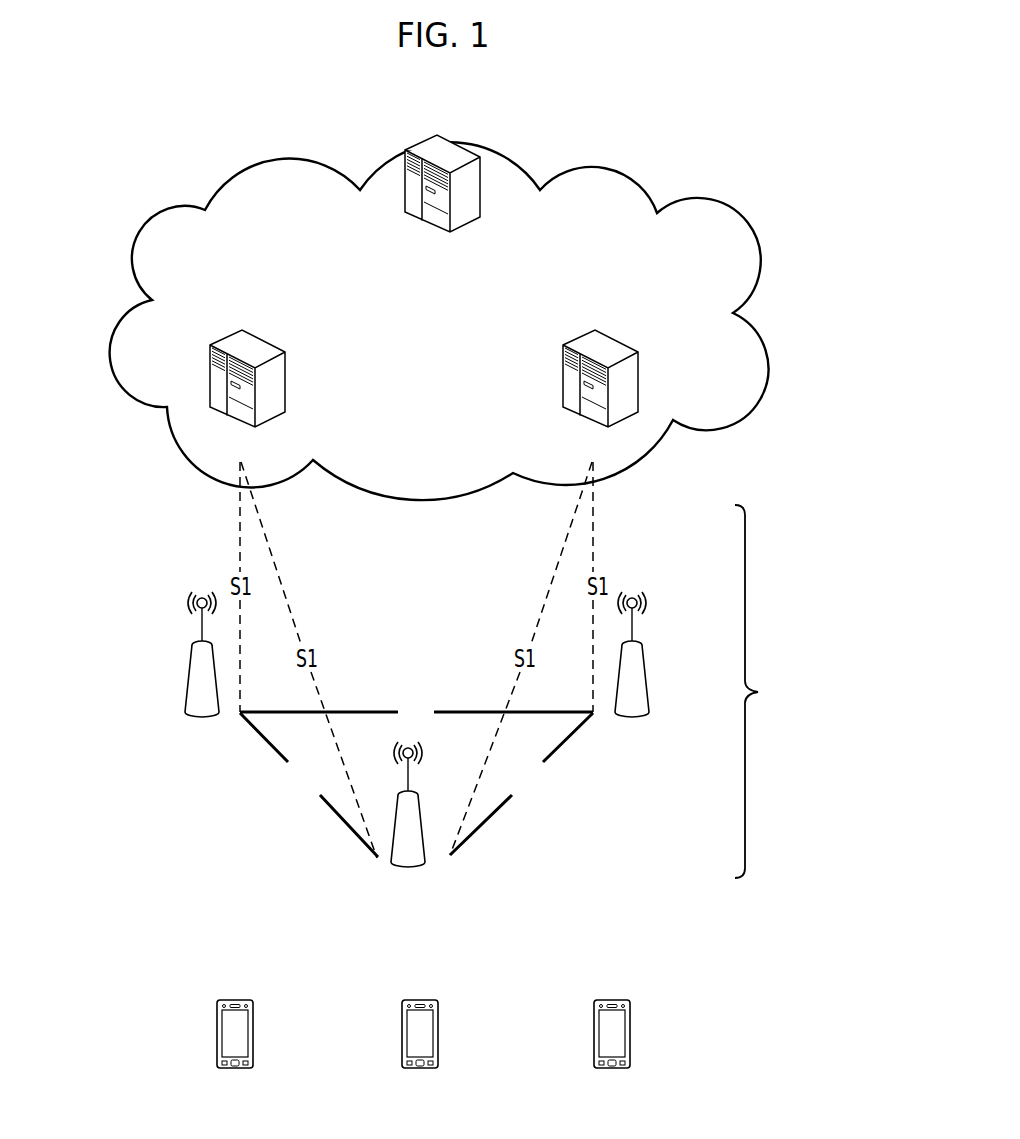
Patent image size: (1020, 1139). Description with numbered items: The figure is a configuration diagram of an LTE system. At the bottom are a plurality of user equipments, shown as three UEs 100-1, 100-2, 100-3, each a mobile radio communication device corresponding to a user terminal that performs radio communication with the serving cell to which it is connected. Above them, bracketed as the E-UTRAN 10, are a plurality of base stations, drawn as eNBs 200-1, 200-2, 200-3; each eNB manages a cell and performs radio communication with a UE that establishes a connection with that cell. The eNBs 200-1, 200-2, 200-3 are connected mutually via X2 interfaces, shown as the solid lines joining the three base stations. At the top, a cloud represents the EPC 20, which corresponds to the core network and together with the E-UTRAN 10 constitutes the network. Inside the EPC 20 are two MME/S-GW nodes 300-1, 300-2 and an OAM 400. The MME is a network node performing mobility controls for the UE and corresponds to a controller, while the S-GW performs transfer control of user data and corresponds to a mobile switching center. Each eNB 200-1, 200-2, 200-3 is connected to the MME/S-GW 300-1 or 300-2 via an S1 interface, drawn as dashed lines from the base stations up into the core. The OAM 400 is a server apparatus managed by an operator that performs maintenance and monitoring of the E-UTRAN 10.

The E-UTRAN 10 is at (547, 691).
The EPC 20 is at (643, 181).
The UE 100-1 is at (249, 1000).
The UE 100-2 is at (432, 1000).
The UE 100-3 is at (625, 1000).
The eNB 200-1 is at (189, 678).
The eNB 200-2 is at (423, 837).
The eNB 200-3 is at (644, 659).
The MME/S-GW 300-1 is at (268, 339).
The MME/S-GW 300-2 is at (617, 340).
The OAM 400 is at (440, 133).